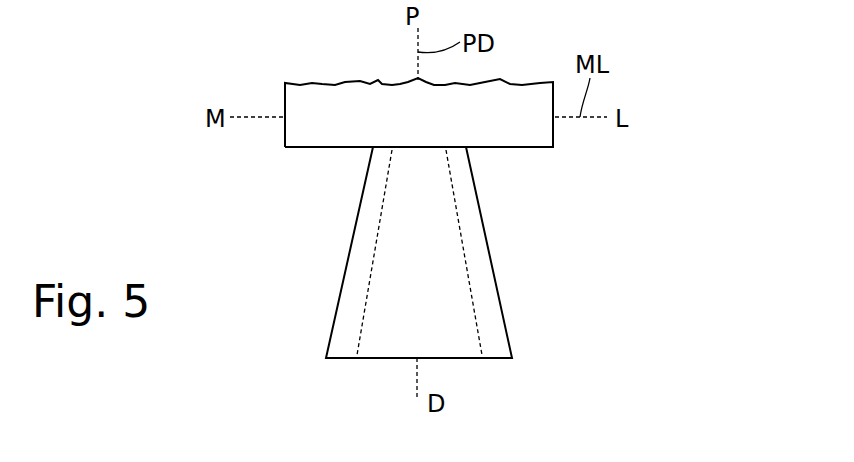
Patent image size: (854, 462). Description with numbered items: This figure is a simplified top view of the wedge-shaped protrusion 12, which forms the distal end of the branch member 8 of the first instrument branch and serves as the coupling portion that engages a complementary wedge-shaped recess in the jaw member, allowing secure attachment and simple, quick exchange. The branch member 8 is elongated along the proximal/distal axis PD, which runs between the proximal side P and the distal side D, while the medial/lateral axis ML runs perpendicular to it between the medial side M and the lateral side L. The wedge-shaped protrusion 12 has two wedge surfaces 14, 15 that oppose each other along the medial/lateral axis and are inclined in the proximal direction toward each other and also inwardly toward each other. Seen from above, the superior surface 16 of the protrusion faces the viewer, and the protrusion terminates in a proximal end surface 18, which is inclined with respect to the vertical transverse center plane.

The branch member 8 is at (641, 192).
The wedge-shaped protrusion 12 is at (536, 268).
The wedge surface 14 is at (367, 258).
The wedge surface 15 is at (472, 247).
The superior surface 16 is at (456, 330).
The proximal end surface 18 is at (418, 395).